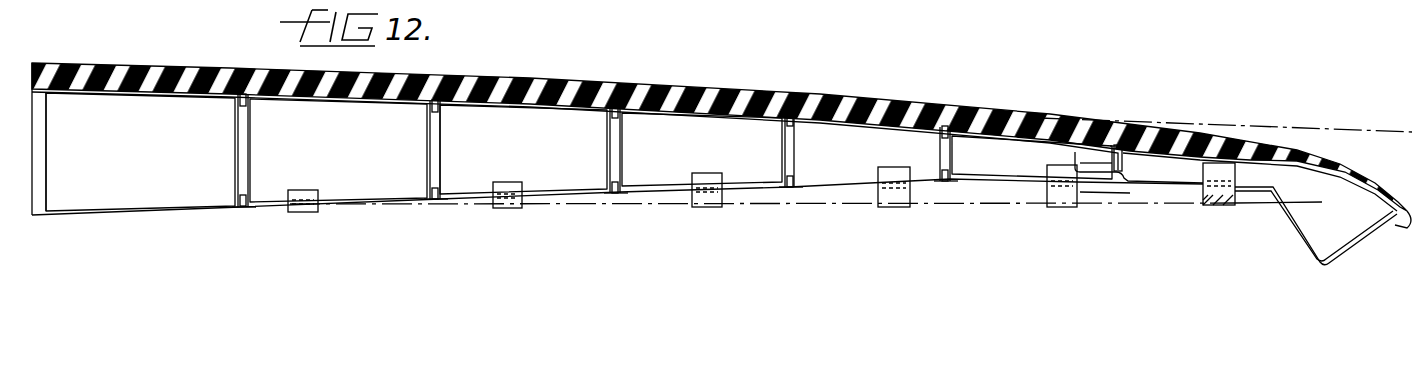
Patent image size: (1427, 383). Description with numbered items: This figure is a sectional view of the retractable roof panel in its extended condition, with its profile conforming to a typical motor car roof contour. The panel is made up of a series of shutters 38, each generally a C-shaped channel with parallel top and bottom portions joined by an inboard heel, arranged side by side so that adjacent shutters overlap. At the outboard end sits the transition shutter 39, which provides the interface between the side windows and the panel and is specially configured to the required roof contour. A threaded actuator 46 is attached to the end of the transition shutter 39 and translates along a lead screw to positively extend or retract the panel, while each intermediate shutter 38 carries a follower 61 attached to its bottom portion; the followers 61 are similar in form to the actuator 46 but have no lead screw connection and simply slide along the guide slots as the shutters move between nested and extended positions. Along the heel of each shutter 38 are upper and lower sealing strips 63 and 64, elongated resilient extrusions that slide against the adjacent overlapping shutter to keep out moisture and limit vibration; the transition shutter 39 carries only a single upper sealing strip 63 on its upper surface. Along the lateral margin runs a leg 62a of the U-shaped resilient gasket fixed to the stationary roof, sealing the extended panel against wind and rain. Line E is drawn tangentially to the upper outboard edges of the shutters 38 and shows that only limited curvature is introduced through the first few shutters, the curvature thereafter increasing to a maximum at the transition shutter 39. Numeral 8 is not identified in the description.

The lower skin 8 is at (1103, 206).
The shutter 38 is at (470, 205).
The transition shutter 39 is at (1307, 240).
The threaded actuator 46 is at (1220, 200).
The follower 61 is at (303, 212).
The gasket leg 62a is at (470, 80).
The upper sealing strip 63 is at (240, 98).
The lower sealing strip 64 is at (241, 204).
The line E is at (1275, 122).